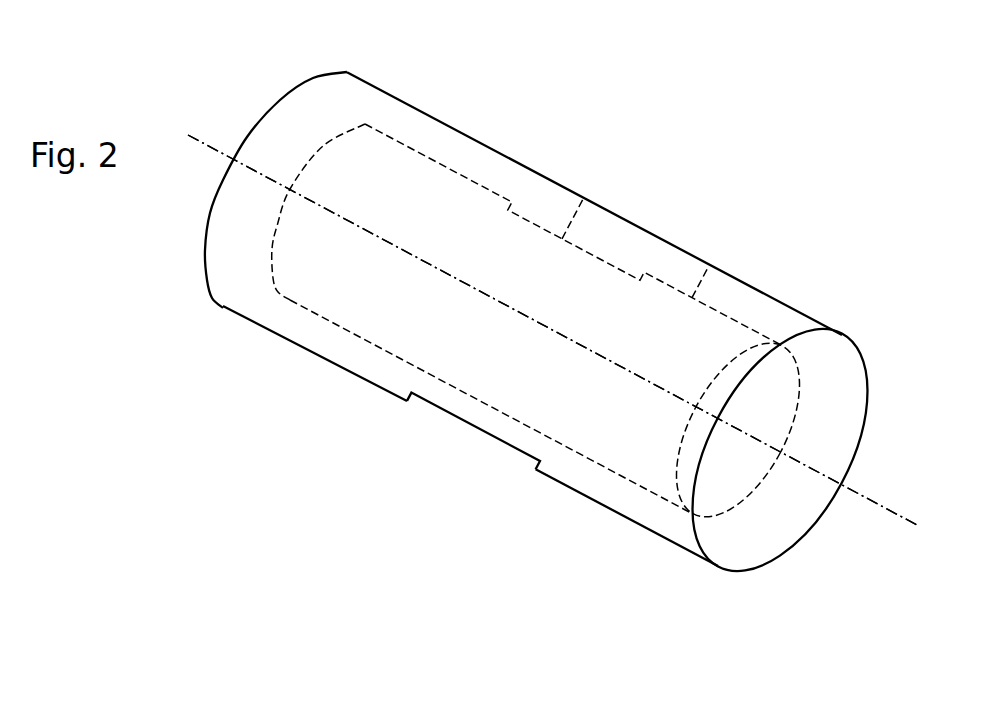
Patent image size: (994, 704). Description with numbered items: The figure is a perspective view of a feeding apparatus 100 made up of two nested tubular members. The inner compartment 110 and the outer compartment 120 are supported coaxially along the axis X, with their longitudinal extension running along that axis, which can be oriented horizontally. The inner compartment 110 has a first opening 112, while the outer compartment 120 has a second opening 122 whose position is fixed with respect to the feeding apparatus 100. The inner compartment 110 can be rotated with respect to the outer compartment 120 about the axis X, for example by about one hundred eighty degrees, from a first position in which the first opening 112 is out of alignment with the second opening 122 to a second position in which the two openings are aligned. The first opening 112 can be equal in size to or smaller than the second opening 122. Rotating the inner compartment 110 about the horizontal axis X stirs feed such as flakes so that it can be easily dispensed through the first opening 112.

The feeding apparatus 100 is at (243, 40).
The inner compartment 110 is at (709, 266).
The first opening 112 is at (584, 197).
The outer compartment 120 is at (590, 498).
The second opening 122 is at (487, 433).
The axis X is at (893, 513).